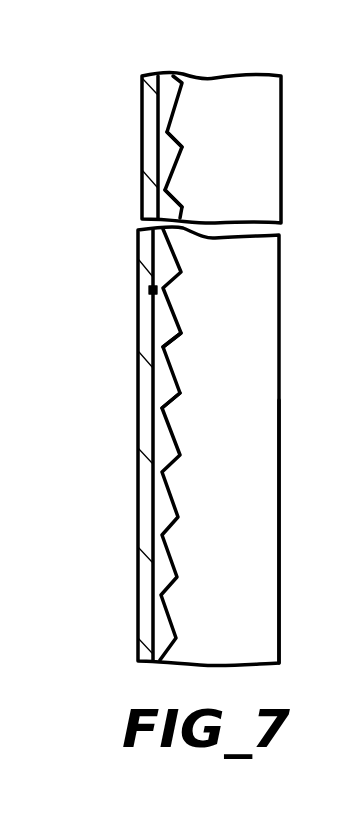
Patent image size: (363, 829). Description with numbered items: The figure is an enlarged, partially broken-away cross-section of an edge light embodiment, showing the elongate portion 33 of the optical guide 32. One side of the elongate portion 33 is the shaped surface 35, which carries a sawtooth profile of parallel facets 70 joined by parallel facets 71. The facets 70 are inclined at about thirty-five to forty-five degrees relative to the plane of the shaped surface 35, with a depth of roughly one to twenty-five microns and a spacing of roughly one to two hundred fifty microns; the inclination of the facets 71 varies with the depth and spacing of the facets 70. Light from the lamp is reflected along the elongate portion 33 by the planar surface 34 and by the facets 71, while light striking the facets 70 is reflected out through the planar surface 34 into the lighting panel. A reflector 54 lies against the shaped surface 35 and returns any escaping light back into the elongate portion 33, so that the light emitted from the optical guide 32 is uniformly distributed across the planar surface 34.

The optical guide 32 is at (281, 193).
The elongate portion 33 is at (263, 562).
The planar surface 34 is at (280, 390).
The shaped surface 35 is at (150, 290).
The reflector 54 is at (144, 517).
The facets 70 is at (170, 137).
The facets 71 is at (170, 167).